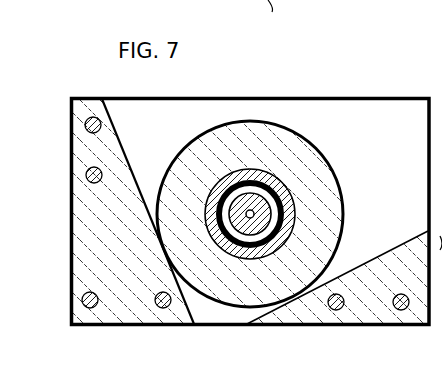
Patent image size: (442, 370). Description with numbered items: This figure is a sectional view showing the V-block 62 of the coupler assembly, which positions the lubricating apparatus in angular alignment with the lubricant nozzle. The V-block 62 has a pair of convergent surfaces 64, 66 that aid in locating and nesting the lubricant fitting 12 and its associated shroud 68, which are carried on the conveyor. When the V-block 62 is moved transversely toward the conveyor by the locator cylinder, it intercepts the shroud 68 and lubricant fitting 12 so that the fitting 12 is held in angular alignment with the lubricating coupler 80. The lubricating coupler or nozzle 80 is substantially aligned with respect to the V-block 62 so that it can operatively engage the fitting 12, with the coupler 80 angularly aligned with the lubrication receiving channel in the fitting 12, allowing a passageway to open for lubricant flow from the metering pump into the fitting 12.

The lubricant fitting 12 is at (237, 200).
The V-block 62 is at (378, 107).
The convergent surface 64 is at (112, 116).
The convergent surface 66 is at (392, 247).
The shroud 68 is at (264, 137).
The lubricating coupler 80 is at (278, 193).